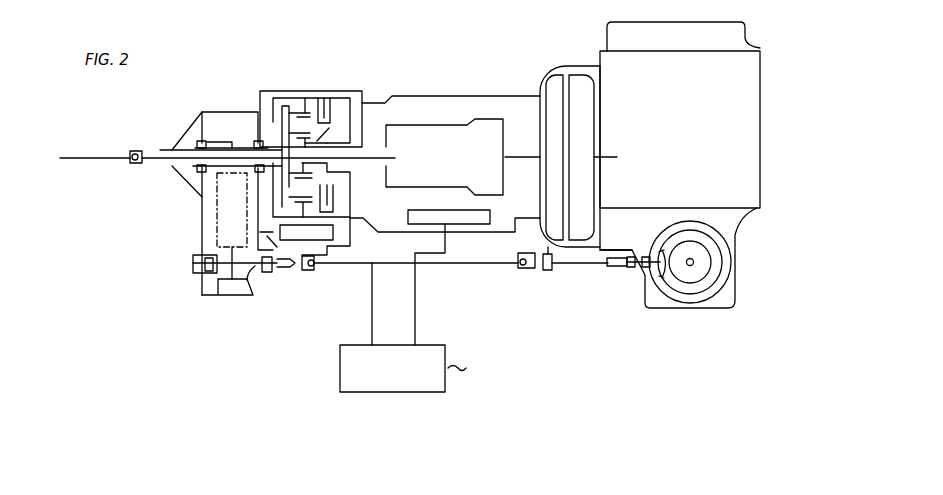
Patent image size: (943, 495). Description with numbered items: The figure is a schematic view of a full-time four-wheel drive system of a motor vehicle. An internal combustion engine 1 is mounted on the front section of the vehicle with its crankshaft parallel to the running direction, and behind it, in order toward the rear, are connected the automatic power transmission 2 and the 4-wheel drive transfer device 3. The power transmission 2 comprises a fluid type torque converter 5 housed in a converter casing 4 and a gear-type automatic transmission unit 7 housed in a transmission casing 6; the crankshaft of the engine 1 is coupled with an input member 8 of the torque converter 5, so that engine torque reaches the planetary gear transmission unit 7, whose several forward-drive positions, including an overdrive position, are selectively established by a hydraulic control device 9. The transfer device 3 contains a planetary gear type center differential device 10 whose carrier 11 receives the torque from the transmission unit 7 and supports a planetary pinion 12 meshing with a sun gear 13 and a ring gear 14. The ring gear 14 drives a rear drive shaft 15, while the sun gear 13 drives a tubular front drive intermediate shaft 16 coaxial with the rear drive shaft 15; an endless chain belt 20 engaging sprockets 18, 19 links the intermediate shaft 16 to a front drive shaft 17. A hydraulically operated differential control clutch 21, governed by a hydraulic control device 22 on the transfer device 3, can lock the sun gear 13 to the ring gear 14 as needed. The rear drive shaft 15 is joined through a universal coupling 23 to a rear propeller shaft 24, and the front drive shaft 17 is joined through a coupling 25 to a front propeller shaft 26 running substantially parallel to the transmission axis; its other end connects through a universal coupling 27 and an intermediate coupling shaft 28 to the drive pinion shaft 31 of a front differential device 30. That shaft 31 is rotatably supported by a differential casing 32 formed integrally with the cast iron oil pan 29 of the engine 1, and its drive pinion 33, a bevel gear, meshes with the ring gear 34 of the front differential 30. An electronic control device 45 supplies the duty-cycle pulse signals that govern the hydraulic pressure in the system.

The internal combustion engine 1 is at (685, 81).
The automatic power transmission 2 is at (455, 96).
The 4-wheel drive transfer device 3 is at (243, 108).
The converter casing 4 is at (576, 66).
The torque converter 5 is at (577, 110).
The transmission casing 6 is at (521, 96).
The automatic transmission unit 7 is at (394, 184).
The input member 8 is at (587, 146).
The hydraulic control device 9 is at (456, 225).
The center differential device 10 is at (312, 108).
The carrier 11 is at (290, 140).
The planetary pinion 12 is at (283, 101).
The sun gear 13 is at (333, 132).
The ring gear 14 is at (297, 108).
The rear drive shaft 15 is at (166, 149).
The front drive intermediate shaft 16 is at (210, 141).
The front drive shaft 17 is at (255, 291).
The sprocket 18 is at (238, 141).
The sprocket 19 is at (218, 296).
The endless chain belt 20 is at (217, 222).
The differential control clutch 21 is at (340, 105).
The hydraulic control device 22 is at (333, 233).
The universal coupling 23 is at (134, 164).
The rear propeller shaft 24 is at (88, 157).
The coupling 25 is at (311, 271).
The front propeller shaft 26 is at (493, 264).
The universal coupling 27 is at (526, 270).
The intermediate coupling shaft 28 is at (575, 265).
The oil pan 29 is at (740, 266).
The front differential device 30 is at (673, 283).
The drive pinion shaft 31 is at (638, 269).
The differential casing 32 is at (632, 250).
The drive pinion 33 is at (662, 253).
The ring gear 34 is at (712, 250).
The electronic control device 45 is at (340, 370).